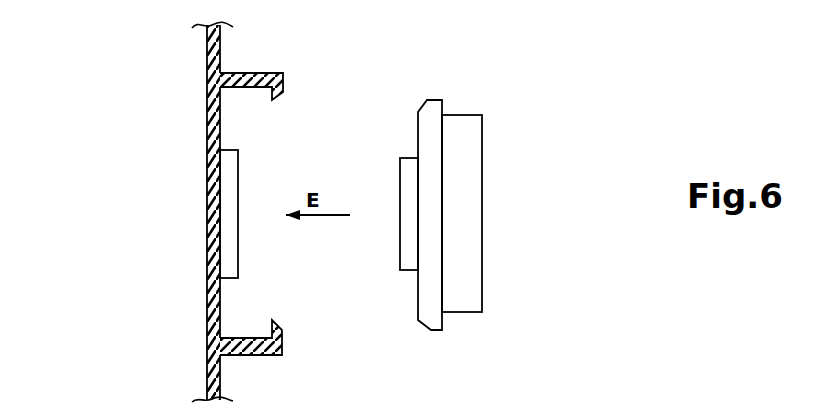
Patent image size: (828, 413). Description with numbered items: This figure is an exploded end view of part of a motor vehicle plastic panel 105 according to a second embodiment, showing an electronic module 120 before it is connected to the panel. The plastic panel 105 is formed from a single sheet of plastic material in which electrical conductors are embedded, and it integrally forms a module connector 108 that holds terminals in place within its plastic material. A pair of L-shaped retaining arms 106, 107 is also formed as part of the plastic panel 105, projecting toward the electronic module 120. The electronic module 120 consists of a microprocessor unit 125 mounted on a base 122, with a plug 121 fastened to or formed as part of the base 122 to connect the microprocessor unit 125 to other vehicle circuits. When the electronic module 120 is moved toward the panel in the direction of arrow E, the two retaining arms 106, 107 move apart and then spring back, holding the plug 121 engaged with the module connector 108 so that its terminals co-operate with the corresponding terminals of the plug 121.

The plastic panel 105 is at (205, 132).
The L-shaped retaining arm 106 is at (283, 88).
The L-shaped retaining arm 107 is at (282, 338).
The module connector 108 is at (238, 178).
The electronic module 120 is at (484, 134).
The plug 121 is at (400, 224).
The base 122 is at (432, 100).
The microprocessor unit 125 is at (460, 115).